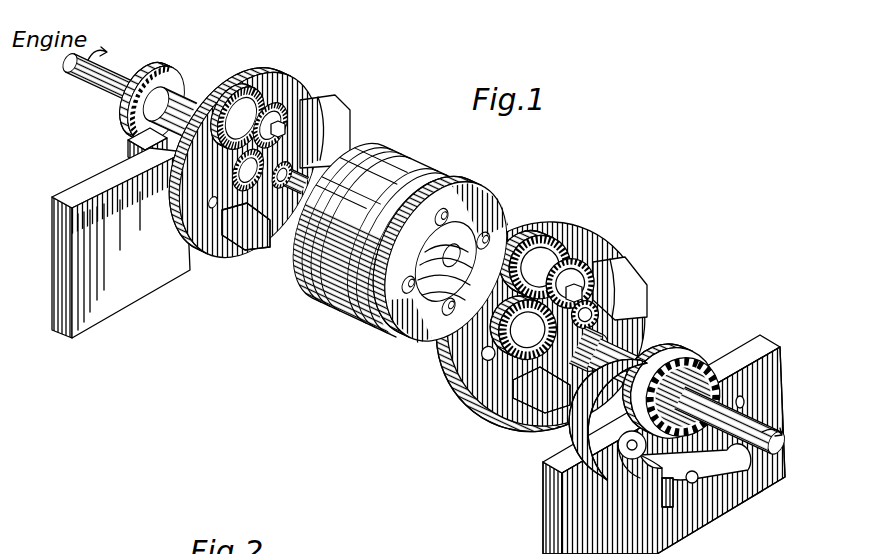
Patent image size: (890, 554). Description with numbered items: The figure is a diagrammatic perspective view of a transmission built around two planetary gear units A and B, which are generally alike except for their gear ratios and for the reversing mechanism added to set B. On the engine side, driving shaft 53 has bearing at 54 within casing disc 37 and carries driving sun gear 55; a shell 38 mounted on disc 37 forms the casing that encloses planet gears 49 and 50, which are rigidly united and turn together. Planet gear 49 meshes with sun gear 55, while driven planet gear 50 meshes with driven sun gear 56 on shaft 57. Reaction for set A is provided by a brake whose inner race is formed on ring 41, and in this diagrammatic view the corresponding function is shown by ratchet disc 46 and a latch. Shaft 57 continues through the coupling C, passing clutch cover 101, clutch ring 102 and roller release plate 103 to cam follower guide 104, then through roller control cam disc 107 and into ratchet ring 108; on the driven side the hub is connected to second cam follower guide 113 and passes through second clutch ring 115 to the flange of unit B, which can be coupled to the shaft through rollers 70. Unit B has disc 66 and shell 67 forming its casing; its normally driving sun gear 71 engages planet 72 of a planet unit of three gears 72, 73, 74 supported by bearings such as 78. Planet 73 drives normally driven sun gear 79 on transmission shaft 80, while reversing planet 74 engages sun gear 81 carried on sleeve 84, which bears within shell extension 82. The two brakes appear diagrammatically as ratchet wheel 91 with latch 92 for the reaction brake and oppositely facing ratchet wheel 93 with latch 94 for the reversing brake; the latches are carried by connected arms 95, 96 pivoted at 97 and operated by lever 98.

The ring 41 is at (120, 140).
The ratchet disc 46 is at (178, 92).
The driving shaft 53 is at (110, 94).
The bearing 54 is at (198, 114).
The planet gear 49 is at (255, 92).
The casing disc 37 is at (284, 108).
The driven planet gear 50 is at (296, 112).
The shell 38 is at (340, 130).
The shaft 57 is at (300, 172).
The driving sun gear 55 is at (220, 190).
The driven sun gear 56 is at (262, 236).
The planetary gear unit A is at (361, 115).
The planetary gear unit B is at (621, 269).
The clutch drum C is at (465, 201).
The clutch cover 101 is at (292, 262).
The clutch ring 102 is at (300, 282).
The roller release plate 103 is at (370, 142).
The cam follower guide 104 is at (382, 152).
The roller control cam disc 107 is at (380, 162).
The ratchet ring 108 is at (402, 172).
The second cam follower guide 113 is at (432, 176).
The second clutch ring 115 is at (392, 343).
The rollers 70 is at (470, 218).
The planet gear 72 is at (548, 240).
The planet gear 73 is at (575, 258).
The reversing planet gear 74 is at (583, 285).
The bearing 78 is at (597, 302).
The sleeve 84 is at (600, 341).
The shell 67 is at (645, 312).
The normally driving sun gear 71 is at (490, 344).
The normally driven sun gear 79 is at (518, 362).
The sun gear 81 is at (560, 402).
The disc 66 is at (464, 380).
The shell extension 82 is at (640, 366).
The ratchet wheel 91 is at (670, 372).
The ratchet wheel 93 is at (702, 370).
The latch 94 is at (745, 402).
The transmission shaft 80 is at (768, 438).
The arm 96 is at (745, 456).
The pivot 97 is at (700, 480).
The arm 95 is at (650, 498).
The lever 98 is at (662, 510).
The latch 92 is at (620, 482).